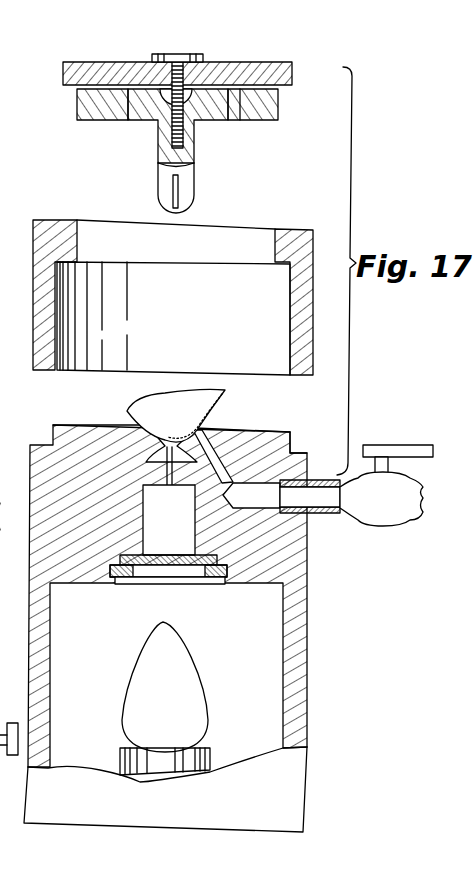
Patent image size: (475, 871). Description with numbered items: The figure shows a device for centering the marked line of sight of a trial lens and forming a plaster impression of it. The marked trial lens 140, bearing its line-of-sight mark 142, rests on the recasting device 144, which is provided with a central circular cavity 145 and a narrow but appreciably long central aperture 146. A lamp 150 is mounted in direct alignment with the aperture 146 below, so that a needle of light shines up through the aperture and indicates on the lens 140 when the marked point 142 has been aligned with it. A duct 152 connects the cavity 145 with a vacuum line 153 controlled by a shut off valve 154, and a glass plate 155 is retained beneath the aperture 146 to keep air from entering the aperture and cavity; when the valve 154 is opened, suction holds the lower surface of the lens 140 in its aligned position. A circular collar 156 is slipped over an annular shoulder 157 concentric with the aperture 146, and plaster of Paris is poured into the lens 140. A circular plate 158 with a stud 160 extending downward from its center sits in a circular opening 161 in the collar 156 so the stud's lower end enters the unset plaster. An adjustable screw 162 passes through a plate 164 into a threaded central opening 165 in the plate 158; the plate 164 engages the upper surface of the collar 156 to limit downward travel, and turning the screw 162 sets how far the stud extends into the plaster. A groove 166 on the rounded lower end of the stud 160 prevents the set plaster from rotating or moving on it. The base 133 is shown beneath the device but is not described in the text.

The base 133 is at (2, 823).
The trial lens 140 is at (221, 402).
The marked line of sight 142 is at (138, 427).
The recasting device 144 is at (300, 543).
The central circular cavity 145 is at (200, 430).
The central aperture 146 is at (152, 486).
The lamp 150 is at (188, 667).
The duct 152 is at (253, 436).
The vacuum line 153 is at (415, 512).
The shut off valve 154 is at (380, 445).
The glass plate 155 is at (137, 573).
The circular collar 156 is at (47, 273).
The annular shoulder 157 is at (293, 444).
The circular plate 158 is at (88, 108).
The stud 160 is at (163, 153).
The circular opening 161 is at (266, 232).
The adjustable screw 162 is at (188, 60).
The plate 164 is at (290, 70).
The threaded central opening 165 is at (182, 133).
The groove 166 is at (178, 193).